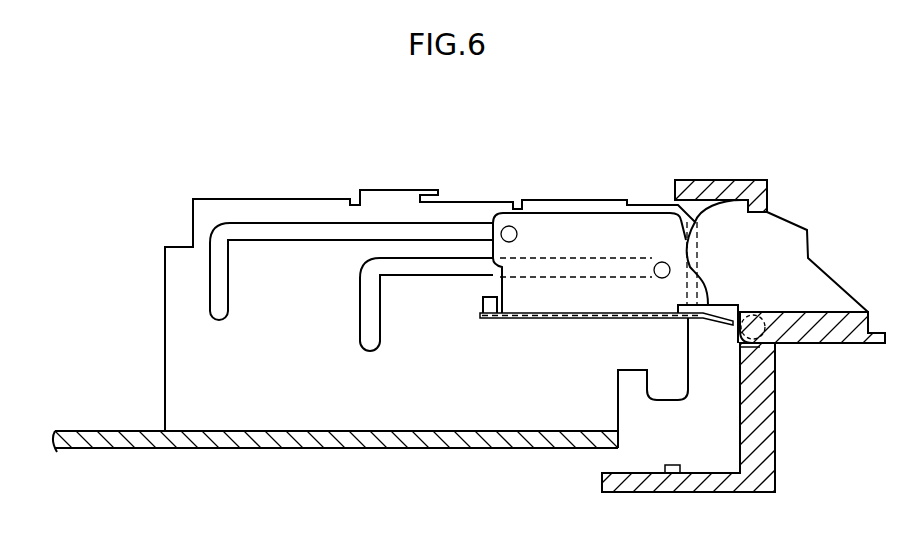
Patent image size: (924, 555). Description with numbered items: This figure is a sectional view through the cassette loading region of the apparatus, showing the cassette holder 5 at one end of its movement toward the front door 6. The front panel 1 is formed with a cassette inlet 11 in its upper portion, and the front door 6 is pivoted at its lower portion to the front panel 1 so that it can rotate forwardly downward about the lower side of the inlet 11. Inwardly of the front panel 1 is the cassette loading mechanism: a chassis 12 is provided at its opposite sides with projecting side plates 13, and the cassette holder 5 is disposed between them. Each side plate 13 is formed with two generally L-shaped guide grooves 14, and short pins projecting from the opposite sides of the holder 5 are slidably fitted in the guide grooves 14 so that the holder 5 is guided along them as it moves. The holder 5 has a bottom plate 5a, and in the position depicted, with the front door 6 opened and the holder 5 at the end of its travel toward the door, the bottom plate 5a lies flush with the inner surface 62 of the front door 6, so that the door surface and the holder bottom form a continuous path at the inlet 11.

The front panel 1 is at (763, 427).
The cassette holder 5 is at (553, 237).
The bottom plate 5a is at (579, 311).
The front door 6 is at (827, 345).
The inner surface 62 is at (823, 311).
The cassette inlet 11 is at (740, 347).
The chassis 12 is at (133, 430).
The side plate 13 is at (312, 205).
The guide groove 14 is at (269, 223).